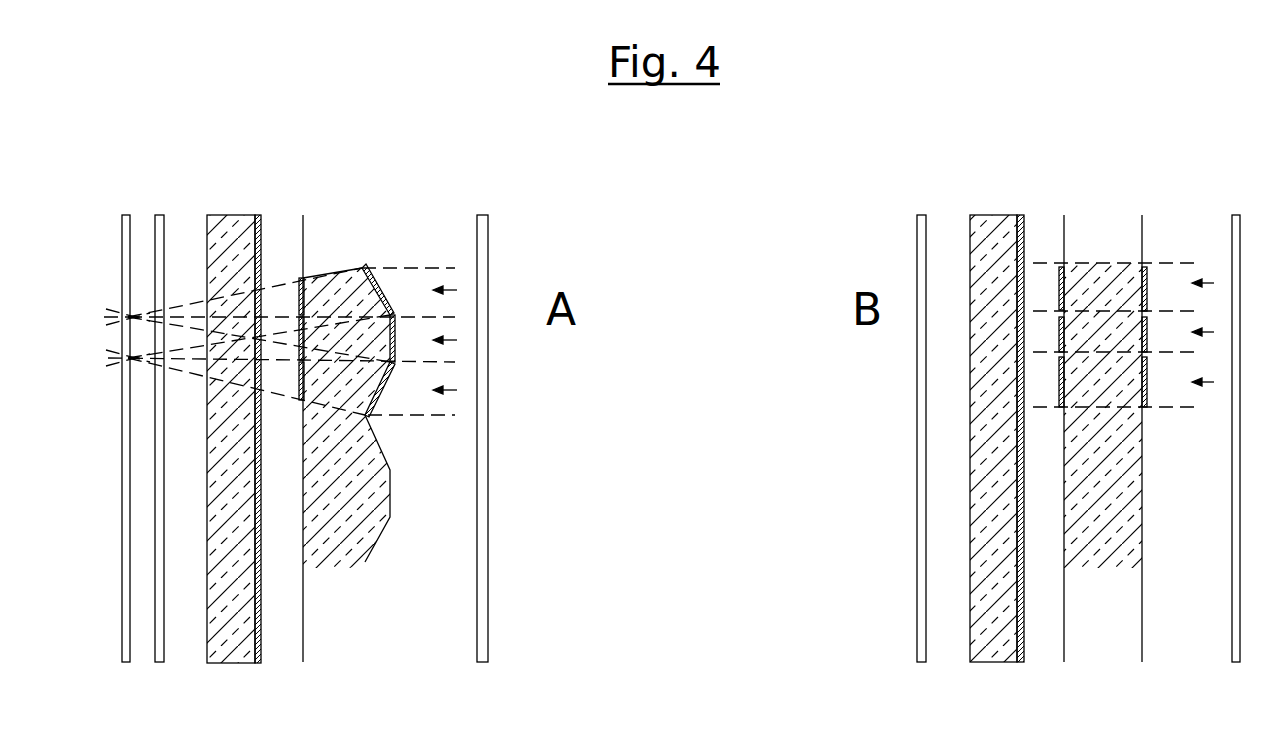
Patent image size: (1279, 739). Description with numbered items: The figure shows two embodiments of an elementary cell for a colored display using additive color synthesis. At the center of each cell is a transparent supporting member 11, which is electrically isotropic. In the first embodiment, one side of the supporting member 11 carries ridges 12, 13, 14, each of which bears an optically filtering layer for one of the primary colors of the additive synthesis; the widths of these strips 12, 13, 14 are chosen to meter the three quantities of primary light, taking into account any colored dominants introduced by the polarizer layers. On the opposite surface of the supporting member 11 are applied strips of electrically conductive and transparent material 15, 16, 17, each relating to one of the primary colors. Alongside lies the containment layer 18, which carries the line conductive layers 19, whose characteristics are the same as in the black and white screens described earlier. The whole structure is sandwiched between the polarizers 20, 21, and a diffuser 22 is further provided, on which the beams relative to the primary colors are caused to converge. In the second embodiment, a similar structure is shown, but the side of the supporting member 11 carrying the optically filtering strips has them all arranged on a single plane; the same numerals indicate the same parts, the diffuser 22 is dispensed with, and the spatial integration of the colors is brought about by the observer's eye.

The transparent supporting member 11 is at (1105, 242).
The ridge 12 is at (375, 285).
The ridge 13 is at (392, 339).
The ridge 14 is at (380, 383).
The strip of electrically conductive and transparent material 15 is at (299, 292).
The strip of electrically conductive and transparent material 16 is at (297, 347).
The strip of electrically conductive and transparent material 17 is at (299, 388).
The containment layer 18 is at (235, 655).
The line conductive layer 19 is at (259, 650).
The polarizer 20 is at (482, 655).
The polarizer 21 is at (161, 662).
The diffuser 22 is at (125, 662).